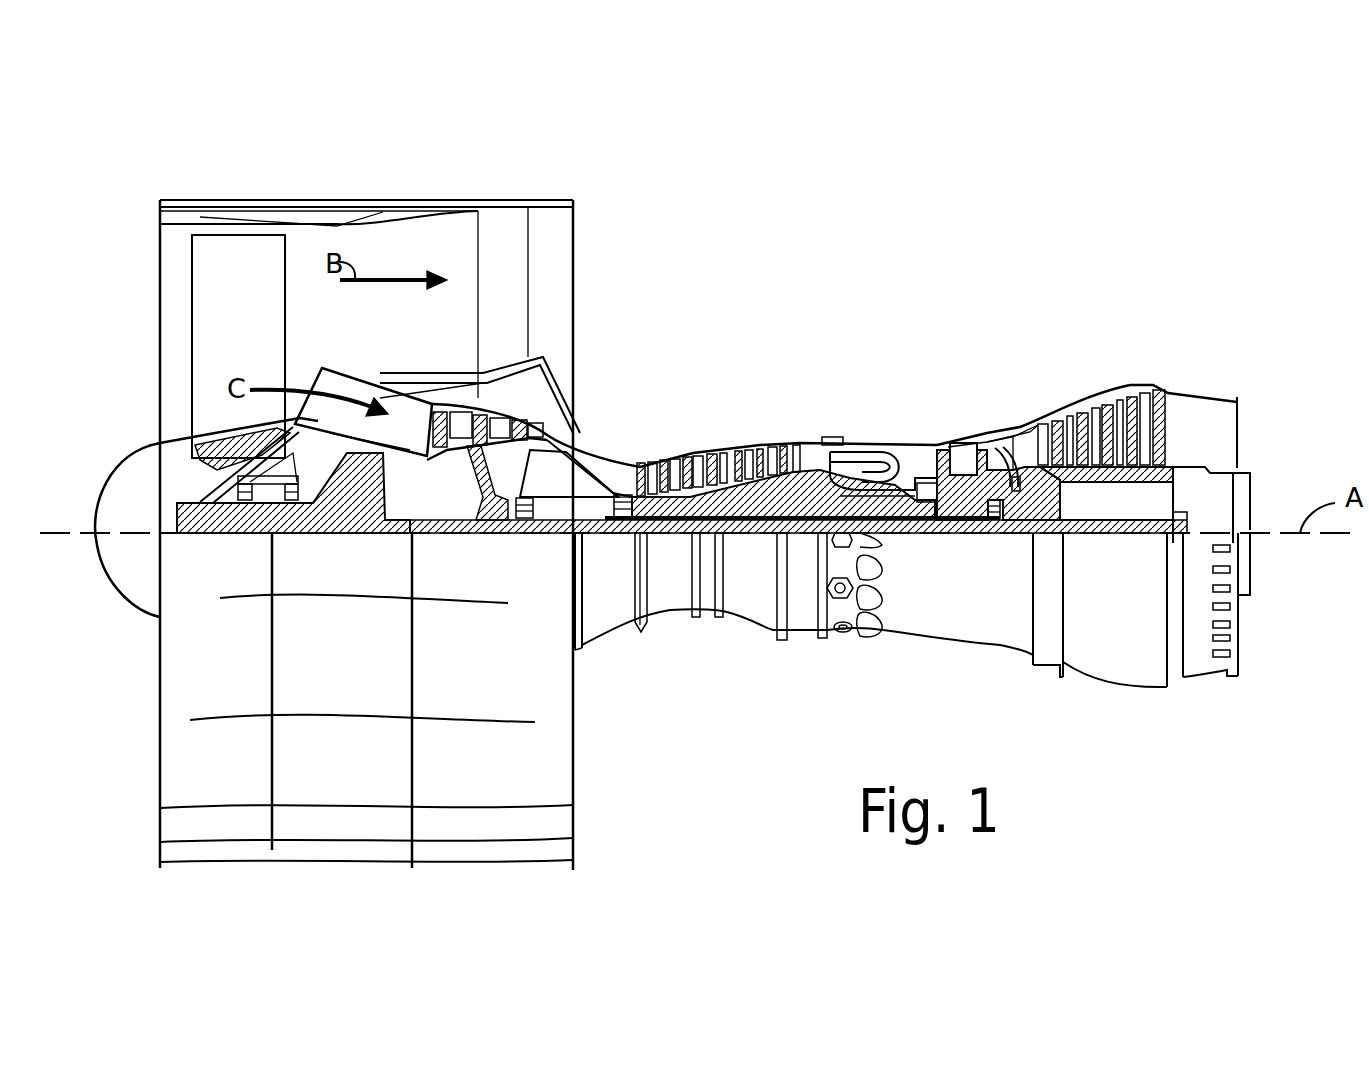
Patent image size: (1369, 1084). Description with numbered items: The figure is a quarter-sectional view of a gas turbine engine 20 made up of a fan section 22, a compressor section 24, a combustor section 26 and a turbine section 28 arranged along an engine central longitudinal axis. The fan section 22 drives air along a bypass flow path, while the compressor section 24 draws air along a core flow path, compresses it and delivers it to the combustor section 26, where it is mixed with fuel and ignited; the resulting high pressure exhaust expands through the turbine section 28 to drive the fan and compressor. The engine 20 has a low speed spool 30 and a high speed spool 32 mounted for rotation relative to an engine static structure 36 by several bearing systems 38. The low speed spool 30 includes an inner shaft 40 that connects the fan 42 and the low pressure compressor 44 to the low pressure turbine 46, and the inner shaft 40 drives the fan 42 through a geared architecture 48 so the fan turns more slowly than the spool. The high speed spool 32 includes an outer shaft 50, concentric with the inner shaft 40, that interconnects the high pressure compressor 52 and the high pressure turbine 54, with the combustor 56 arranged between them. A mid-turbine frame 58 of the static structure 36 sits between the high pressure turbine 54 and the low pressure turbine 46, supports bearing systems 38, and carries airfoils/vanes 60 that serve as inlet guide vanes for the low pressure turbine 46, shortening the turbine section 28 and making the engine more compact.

The gas turbine engine 20 is at (658, 170).
The fan section 22 is at (390, 172).
The compressor section 24 is at (418, 318).
The combustor section 26 is at (863, 318).
The turbine section 28 is at (940, 318).
The low speed spool 30 is at (748, 548).
The high speed spool 32 is at (783, 498).
The engine static structure 36 is at (805, 645).
The bearing systems 38 is at (244, 508).
The inner shaft 40 is at (596, 533).
The fan 42 is at (221, 319).
The low pressure compressor section 44 is at (500, 425).
The low pressure turbine section 46 is at (1107, 402).
The geared architecture 48 is at (368, 508).
The outer shaft 50 is at (890, 510).
The high pressure compressor section 52 is at (712, 458).
The high pressure turbine section 54 is at (968, 428).
The combustor 56 is at (877, 468).
The mid-turbine frame 58 is at (1005, 450).
The airfoils/vanes 60 is at (1008, 465).